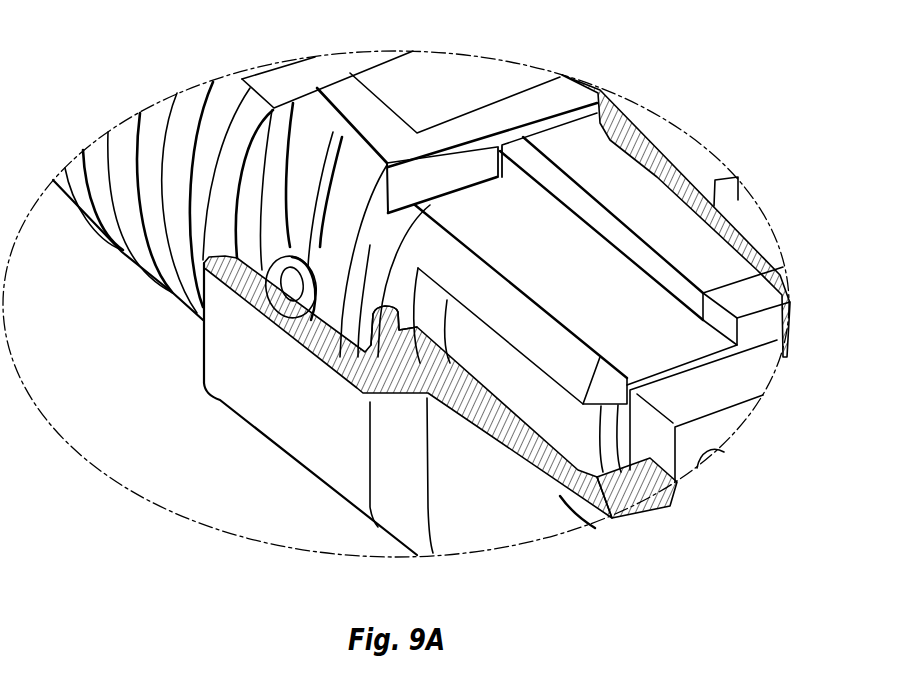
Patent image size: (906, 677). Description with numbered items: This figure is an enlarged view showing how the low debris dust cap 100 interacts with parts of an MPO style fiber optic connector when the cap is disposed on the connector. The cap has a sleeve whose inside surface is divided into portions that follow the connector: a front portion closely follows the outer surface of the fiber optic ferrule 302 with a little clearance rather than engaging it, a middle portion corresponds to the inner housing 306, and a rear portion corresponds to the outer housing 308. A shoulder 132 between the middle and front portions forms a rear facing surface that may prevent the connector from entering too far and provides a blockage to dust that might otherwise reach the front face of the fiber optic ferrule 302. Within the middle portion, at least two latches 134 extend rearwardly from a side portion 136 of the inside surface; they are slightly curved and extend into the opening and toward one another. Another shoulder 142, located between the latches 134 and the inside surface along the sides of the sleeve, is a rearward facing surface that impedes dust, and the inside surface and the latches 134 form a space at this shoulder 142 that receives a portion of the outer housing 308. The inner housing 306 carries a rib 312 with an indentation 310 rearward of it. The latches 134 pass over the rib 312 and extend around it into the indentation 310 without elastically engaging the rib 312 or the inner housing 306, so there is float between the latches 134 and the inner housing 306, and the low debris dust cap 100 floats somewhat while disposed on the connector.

The low debris dust cap 100 is at (745, 192).
The shoulder 132 is at (608, 476).
The latches 134 is at (383, 307).
The side portion 136 is at (230, 353).
The shoulder 142 is at (403, 398).
The fiber optic ferrule 302 is at (742, 375).
The inner housing 306 is at (637, 190).
The outer housing 308 is at (458, 176).
The indentation 310 is at (378, 243).
The rib 312 is at (405, 317).